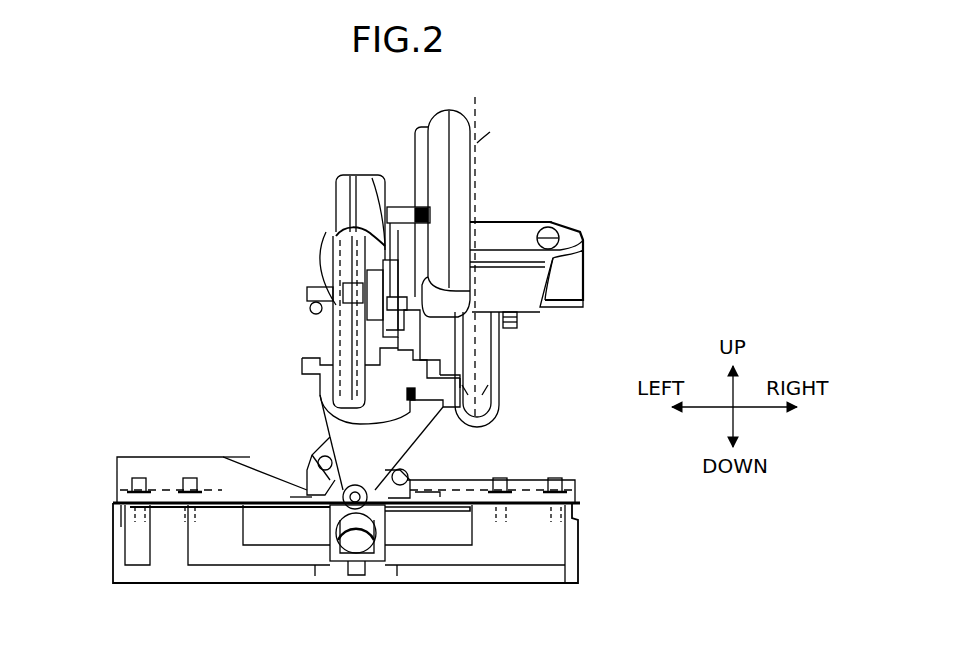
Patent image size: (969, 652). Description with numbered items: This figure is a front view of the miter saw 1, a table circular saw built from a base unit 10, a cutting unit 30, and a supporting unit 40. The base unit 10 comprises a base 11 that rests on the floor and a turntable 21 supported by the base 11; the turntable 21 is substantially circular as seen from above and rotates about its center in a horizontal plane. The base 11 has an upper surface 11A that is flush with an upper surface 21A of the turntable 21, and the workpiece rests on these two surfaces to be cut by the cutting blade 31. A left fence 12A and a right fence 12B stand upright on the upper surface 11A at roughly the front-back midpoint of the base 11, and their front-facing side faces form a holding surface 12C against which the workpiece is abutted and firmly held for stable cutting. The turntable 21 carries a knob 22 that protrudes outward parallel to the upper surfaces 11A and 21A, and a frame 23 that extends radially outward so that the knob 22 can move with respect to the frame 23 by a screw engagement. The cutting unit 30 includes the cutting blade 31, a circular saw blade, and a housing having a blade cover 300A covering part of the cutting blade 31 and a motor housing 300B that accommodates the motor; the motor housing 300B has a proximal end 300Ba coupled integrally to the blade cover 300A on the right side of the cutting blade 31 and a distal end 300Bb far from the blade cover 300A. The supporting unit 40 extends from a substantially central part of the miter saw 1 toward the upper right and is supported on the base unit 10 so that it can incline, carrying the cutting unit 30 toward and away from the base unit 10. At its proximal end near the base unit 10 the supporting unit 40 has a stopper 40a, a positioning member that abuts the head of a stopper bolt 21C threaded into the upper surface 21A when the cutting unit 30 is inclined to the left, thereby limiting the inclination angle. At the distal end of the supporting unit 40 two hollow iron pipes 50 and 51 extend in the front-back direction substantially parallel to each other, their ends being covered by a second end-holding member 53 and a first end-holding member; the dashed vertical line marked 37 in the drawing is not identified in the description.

The miter saw 1 is at (606, 120).
The base unit 10 is at (610, 516).
The base 11 is at (553, 540).
The upper surface 11A is at (533, 497).
The left fence 12A is at (158, 455).
The right fence 12B is at (476, 493).
The holding surface 12C is at (230, 487).
The turntable 21 is at (440, 527).
The upper surface 21A is at (430, 492).
The stopper bolt 21C is at (300, 497).
The knob 22 is at (358, 538).
The frame 23 is at (332, 513).
The cutting unit 30 is at (513, 141).
The cutting blade 31 is at (325, 248).
The handle center line 37 is at (458, 111).
The supporting unit 40 is at (325, 425).
The stopper 40a is at (322, 476).
The pipe 50 is at (500, 340).
The pipe 51 is at (498, 374).
The second end-holding member 53 is at (453, 362).
The blade cover 300A is at (426, 127).
The motor housing 300B is at (512, 223).
The proximal end 300Ba is at (478, 222).
The distal end 300Bb is at (584, 250).